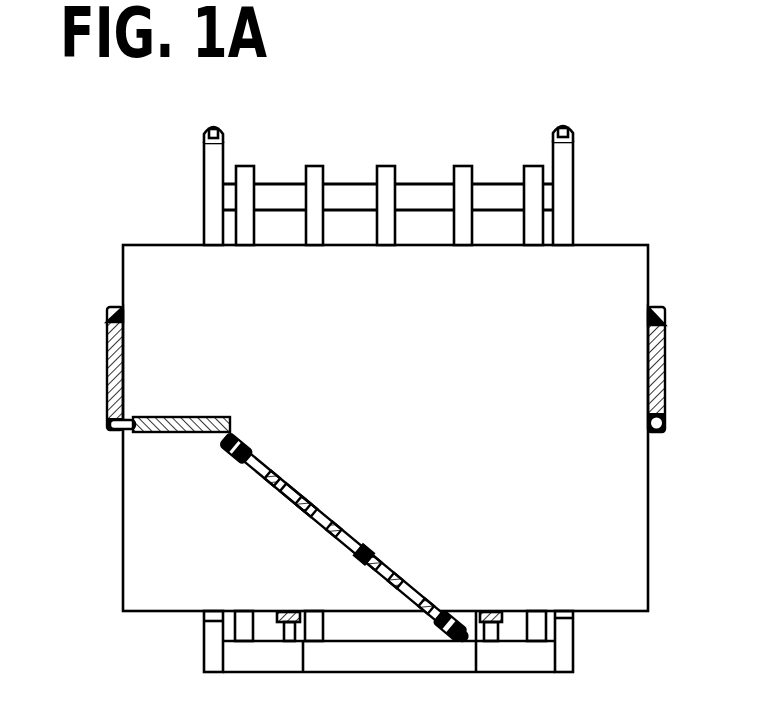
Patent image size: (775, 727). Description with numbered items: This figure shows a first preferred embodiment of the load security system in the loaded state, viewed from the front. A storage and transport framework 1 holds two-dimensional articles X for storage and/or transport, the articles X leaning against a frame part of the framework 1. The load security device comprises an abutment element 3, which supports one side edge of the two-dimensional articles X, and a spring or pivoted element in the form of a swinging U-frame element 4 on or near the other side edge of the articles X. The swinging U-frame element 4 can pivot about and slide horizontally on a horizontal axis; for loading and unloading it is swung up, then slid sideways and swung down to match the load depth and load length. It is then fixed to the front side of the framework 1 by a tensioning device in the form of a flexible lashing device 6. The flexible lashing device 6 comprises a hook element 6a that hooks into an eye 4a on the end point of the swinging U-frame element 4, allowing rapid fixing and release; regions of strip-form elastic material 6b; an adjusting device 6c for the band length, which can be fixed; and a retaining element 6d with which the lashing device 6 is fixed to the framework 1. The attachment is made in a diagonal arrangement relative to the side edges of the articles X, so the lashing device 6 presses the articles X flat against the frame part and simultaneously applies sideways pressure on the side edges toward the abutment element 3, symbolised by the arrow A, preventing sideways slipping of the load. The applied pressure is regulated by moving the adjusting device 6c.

The storage and transport framework 1 is at (344, 183).
The two-dimensional articles X is at (640, 265).
The abutment element 3 is at (665, 346).
The swinging U-frame element 4 is at (107, 378).
The eye 4a is at (212, 433).
The flexible lashing device 6 is at (325, 537).
The hook element 6a is at (243, 440).
The regions of strip-form elastic material 6b is at (300, 488).
The adjusting device for the band length 6c is at (363, 548).
The retaining element 6d is at (452, 610).
The arrow A is at (272, 334).